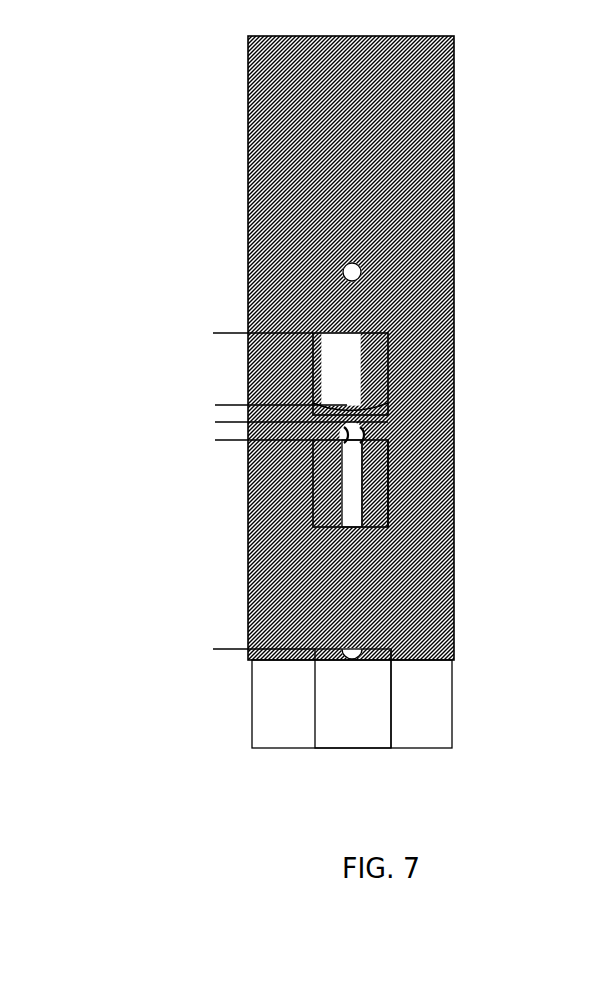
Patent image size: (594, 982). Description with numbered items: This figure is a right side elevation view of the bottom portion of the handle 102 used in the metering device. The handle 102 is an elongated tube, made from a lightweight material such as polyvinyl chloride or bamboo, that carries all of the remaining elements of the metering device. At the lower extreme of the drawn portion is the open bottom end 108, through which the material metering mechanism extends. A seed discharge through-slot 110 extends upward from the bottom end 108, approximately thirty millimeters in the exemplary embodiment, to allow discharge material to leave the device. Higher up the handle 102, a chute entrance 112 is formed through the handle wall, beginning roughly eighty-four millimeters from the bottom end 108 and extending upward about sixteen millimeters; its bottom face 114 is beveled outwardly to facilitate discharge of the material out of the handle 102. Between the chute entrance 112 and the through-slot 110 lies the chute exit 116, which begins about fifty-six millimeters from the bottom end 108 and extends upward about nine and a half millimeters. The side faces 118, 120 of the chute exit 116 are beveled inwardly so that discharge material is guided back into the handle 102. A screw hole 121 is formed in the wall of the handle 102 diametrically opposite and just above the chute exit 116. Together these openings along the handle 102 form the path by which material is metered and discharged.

The handle 102 is at (250, 308).
The bottom end 108 is at (427, 748).
The seed discharge through-slot 110 is at (328, 748).
The chute entrance 112 is at (389, 355).
The bottom face 114 is at (389, 402).
The chute exit 116 is at (325, 470).
The side face 118 is at (327, 505).
The side face 120 is at (389, 495).
The screw hole 121 is at (262, 404).